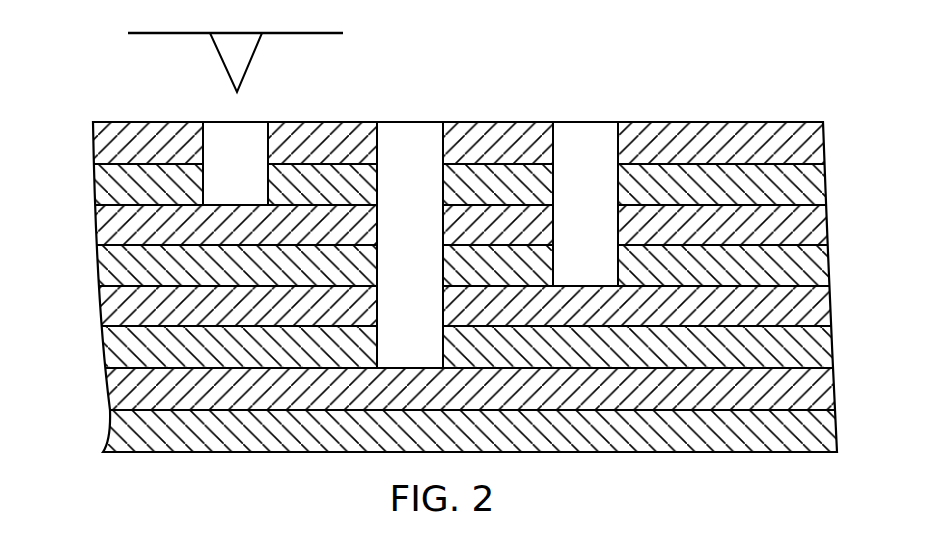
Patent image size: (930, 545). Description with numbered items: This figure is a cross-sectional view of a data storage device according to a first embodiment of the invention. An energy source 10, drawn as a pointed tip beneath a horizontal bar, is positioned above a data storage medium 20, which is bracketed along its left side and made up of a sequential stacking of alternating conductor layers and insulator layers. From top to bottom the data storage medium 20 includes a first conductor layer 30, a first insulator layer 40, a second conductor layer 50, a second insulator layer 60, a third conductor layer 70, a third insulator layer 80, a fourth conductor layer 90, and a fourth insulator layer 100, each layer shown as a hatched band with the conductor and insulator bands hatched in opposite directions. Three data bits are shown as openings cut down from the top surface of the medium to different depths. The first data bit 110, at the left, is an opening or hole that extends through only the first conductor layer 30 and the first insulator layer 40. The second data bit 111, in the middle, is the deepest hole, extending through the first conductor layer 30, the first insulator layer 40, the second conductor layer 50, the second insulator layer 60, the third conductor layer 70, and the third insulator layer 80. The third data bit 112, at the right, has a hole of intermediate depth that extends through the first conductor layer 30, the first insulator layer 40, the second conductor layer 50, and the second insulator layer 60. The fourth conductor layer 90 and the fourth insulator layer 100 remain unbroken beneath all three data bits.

The energy source 10 is at (266, 64).
The data storage medium 20 is at (76, 123).
The first conductor layer 30 is at (724, 150).
The first insulator layer 40 is at (724, 194).
The second conductor layer 50 is at (170, 237).
The second insulator layer 60 is at (170, 280).
The third conductor layer 70 is at (726, 317).
The third insulator layer 80 is at (726, 361).
The fourth conductor layer 90 is at (511, 402).
The fourth insulator layer 100 is at (480, 442).
The first data bit 110 is at (235, 130).
The second data bit 111 is at (410, 134).
The third data bit 112 is at (584, 133).